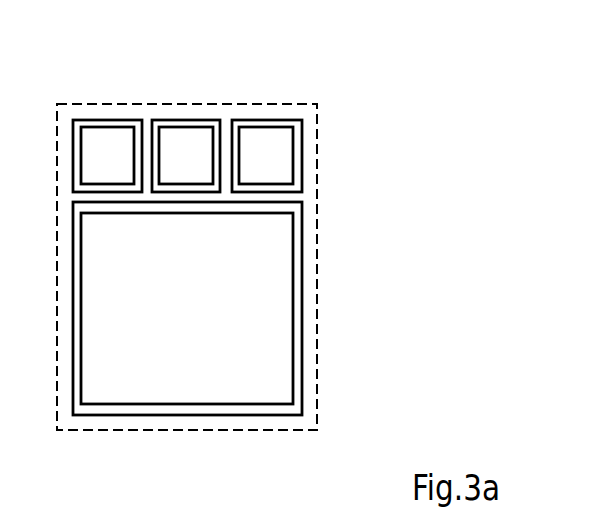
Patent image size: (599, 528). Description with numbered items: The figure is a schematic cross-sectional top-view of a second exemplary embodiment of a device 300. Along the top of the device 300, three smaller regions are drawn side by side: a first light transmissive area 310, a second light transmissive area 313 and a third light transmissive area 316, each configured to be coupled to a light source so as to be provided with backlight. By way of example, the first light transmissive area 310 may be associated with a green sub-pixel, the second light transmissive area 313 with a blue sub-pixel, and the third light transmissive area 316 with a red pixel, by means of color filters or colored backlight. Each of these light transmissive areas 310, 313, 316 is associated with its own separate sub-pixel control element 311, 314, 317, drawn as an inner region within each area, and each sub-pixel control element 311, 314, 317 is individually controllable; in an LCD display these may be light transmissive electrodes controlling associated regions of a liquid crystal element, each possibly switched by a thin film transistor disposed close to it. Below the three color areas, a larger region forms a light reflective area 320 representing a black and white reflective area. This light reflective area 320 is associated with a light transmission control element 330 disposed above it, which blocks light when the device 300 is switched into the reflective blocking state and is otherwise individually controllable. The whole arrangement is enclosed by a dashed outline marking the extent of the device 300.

The device 300 is at (368, 232).
The first light transmissive area 310 is at (95, 120).
The sub-pixel control element 311 is at (116, 127).
The second light transmissive area 313 is at (175, 120).
The sub-pixel control element 314 is at (194, 127).
The third light transmissive area 316 is at (253, 120).
The sub-pixel control element 317 is at (275, 127).
The light reflective area 320 is at (173, 416).
The light transmission control element 330 is at (224, 405).